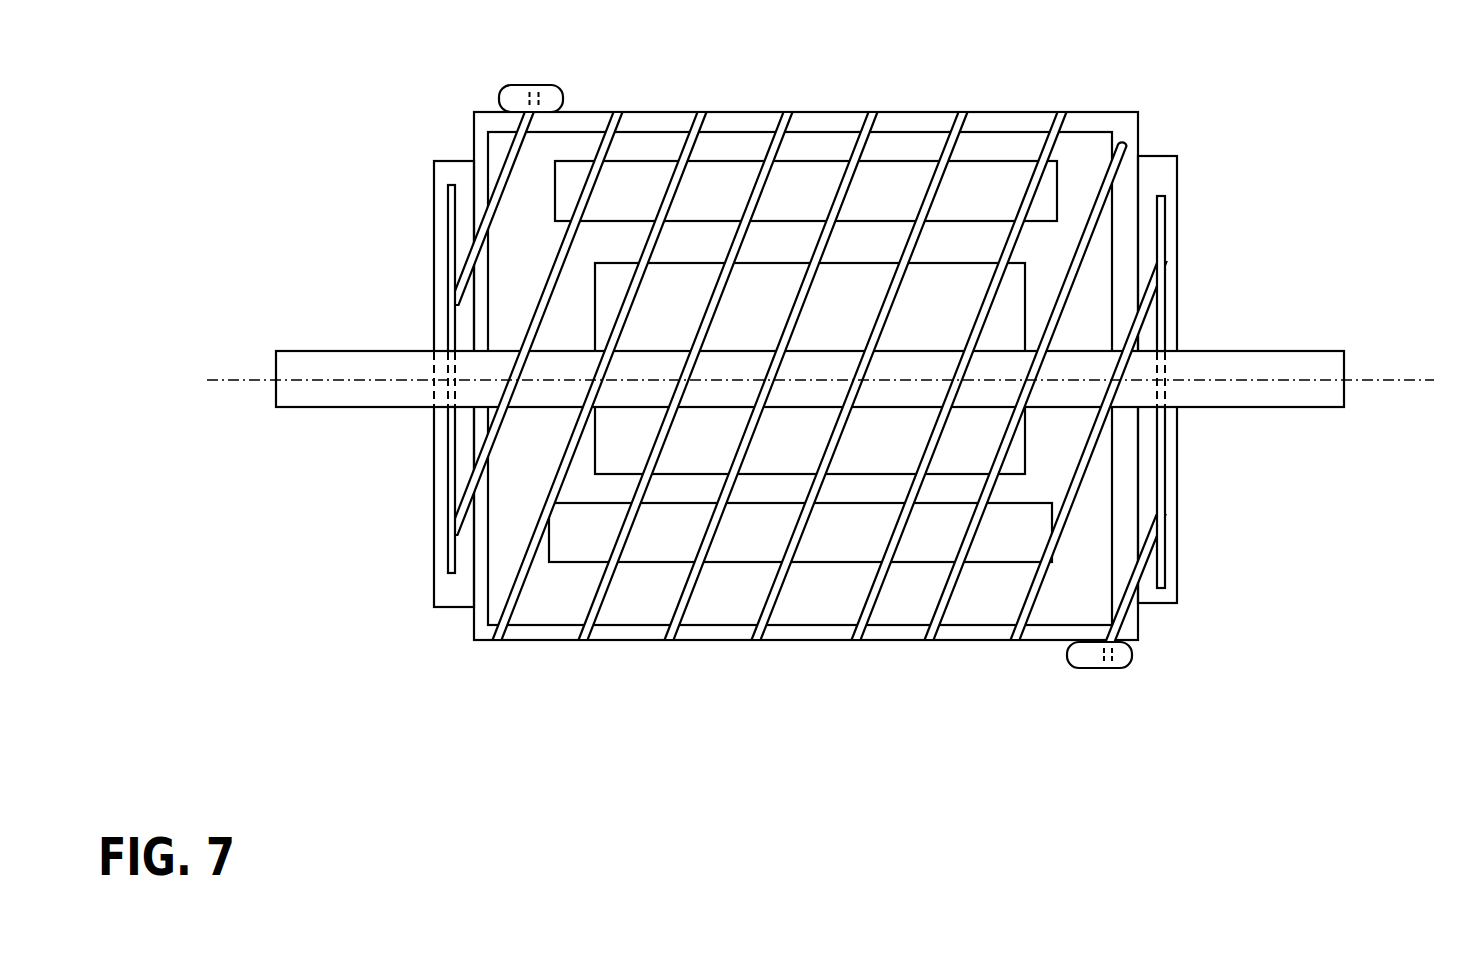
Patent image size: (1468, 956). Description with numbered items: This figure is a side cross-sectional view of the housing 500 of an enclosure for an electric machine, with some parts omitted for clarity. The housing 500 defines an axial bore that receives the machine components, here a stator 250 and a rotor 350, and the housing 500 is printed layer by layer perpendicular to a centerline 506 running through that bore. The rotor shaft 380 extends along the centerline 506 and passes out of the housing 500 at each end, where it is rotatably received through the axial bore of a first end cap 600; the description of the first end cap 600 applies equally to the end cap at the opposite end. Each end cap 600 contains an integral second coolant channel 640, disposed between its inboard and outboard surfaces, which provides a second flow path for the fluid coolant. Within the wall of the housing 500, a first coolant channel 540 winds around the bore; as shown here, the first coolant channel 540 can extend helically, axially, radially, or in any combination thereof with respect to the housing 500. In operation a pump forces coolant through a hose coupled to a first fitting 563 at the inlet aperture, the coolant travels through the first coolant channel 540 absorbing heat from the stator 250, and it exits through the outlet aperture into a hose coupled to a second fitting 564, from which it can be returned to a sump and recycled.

The housing 500 is at (1093, 112).
The first end cap 600 is at (434, 195).
The stator 250 is at (888, 178).
The rotor 350 is at (853, 357).
The rotor shaft 380 is at (377, 390).
The first coolant channel 540 is at (687, 598).
The second coolant channel 640 is at (448, 238).
The first fitting 563 is at (563, 99).
The second fitting 564 is at (1133, 656).
The centerline 506 is at (1388, 380).